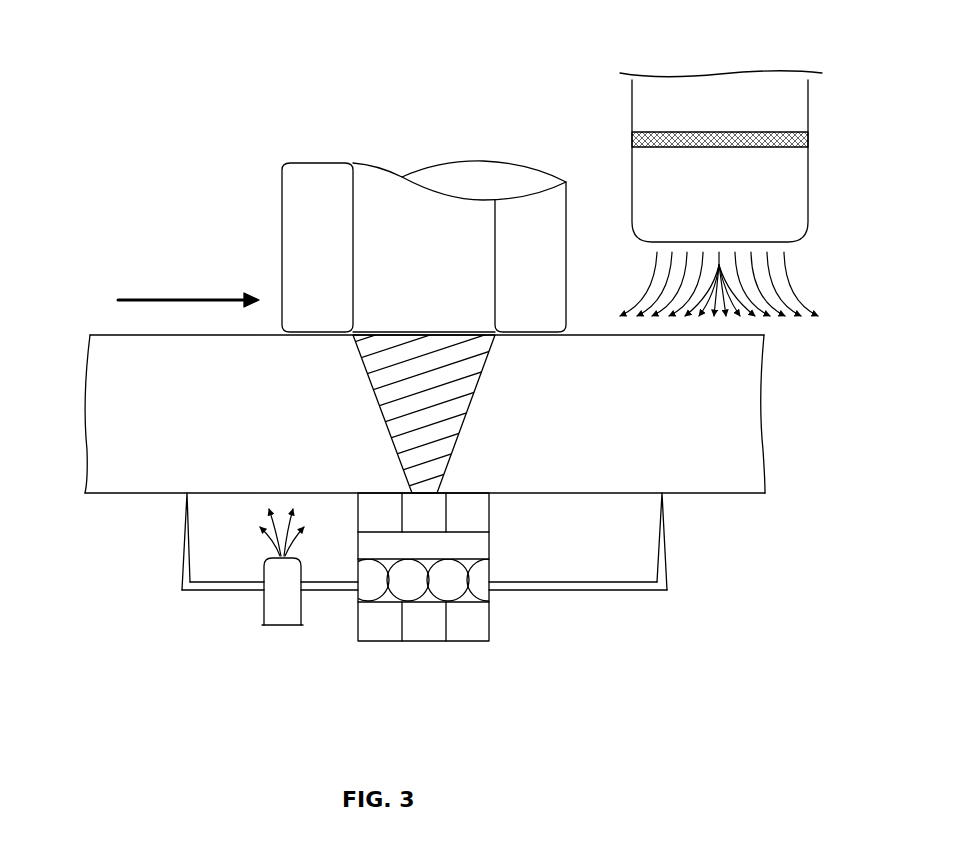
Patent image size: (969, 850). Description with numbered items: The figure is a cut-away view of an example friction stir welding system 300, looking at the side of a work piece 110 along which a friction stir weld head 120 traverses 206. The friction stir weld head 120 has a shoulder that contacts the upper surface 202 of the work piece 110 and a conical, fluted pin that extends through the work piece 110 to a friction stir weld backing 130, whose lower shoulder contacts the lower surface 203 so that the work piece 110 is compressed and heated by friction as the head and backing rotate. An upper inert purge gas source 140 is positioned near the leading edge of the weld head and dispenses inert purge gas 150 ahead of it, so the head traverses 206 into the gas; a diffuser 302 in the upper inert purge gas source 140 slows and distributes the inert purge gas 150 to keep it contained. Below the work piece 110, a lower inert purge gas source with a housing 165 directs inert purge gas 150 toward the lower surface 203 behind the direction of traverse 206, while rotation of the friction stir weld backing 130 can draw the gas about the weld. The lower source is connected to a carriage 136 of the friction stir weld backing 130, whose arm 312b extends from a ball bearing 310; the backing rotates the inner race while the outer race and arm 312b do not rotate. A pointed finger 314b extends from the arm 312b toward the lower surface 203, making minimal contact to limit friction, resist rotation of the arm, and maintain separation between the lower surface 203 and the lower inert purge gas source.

The friction stir welding system 300 is at (108, 92).
The friction stir weld head 120 is at (542, 150).
The work piece 110 is at (437, 416).
The upper surface 202 is at (91, 333).
The lower surface 203 is at (88, 494).
The direction of traverse 206 is at (182, 298).
The upper inert purge gas source 140 is at (751, 130).
The diffuser 302 is at (810, 138).
The inert purge gas 150 is at (790, 268).
The housing 165 is at (283, 628).
The carriage 136 is at (425, 583).
The finger 314b is at (186, 514).
The arm 312b is at (181, 566).
The friction stir weld backing 130 is at (438, 601).
The ball bearing 310 is at (357, 598).